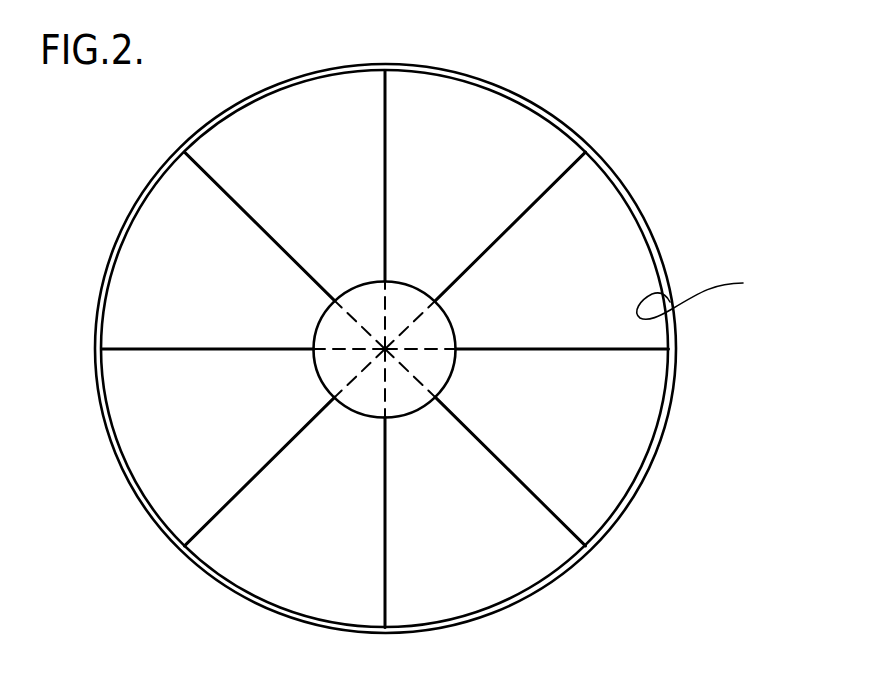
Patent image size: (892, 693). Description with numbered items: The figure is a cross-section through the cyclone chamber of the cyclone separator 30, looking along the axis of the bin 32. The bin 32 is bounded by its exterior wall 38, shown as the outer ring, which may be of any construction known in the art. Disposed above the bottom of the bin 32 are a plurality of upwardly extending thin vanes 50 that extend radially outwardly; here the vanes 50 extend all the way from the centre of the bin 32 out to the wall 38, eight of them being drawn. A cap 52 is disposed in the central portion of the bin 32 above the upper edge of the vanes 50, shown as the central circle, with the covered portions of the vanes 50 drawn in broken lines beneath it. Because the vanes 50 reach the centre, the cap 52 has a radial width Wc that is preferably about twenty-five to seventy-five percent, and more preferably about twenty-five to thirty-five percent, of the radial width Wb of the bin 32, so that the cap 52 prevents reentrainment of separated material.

The cyclone separator 30 is at (660, 175).
The bin 32 is at (656, 237).
The exterior wall 38 is at (709, 294).
The vanes 50 is at (642, 350).
The cap 52 is at (449, 371).
The radial width of bin Wb is at (385, 352).
The radial width of cap Wc is at (378, 352).